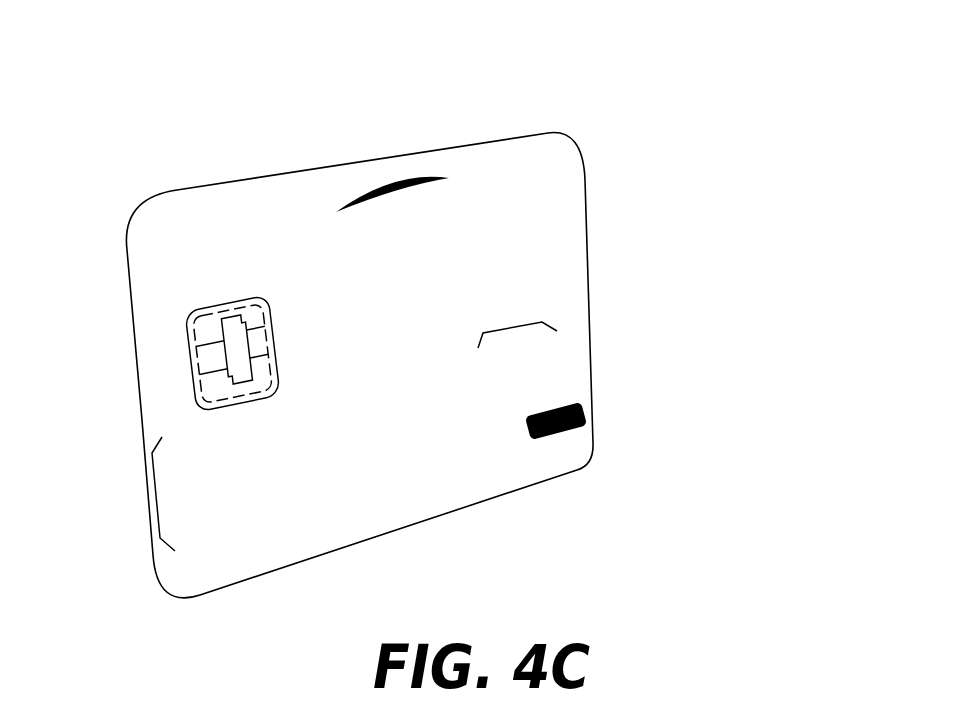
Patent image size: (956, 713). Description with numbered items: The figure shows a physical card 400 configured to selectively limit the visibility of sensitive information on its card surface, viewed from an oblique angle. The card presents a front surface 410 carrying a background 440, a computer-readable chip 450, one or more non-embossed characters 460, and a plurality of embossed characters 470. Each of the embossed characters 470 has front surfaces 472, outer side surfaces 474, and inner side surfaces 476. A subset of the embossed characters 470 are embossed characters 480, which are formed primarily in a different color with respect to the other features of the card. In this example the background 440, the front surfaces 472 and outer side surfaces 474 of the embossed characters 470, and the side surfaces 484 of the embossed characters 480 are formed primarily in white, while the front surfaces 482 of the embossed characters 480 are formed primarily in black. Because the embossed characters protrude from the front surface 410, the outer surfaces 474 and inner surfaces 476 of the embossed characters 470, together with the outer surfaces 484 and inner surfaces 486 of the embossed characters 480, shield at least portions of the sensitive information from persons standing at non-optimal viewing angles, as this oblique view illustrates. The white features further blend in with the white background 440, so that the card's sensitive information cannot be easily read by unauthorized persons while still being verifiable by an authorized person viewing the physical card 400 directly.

The physical card 400 is at (580, 112).
The front surface 410 is at (222, 193).
The background 440 is at (529, 260).
The computer-readable chip 450 is at (187, 343).
The non-embossed characters 460 is at (405, 183).
The embossed characters 470 is at (152, 490).
The front surfaces 472 is at (247, 533).
The outer side surfaces 474 is at (308, 510).
The inner side surfaces 476 is at (412, 487).
The embossed characters 480 is at (521, 323).
The front surfaces 482 is at (512, 380).
The side surfaces 484 is at (493, 373).
The inner surfaces 486 is at (560, 363).